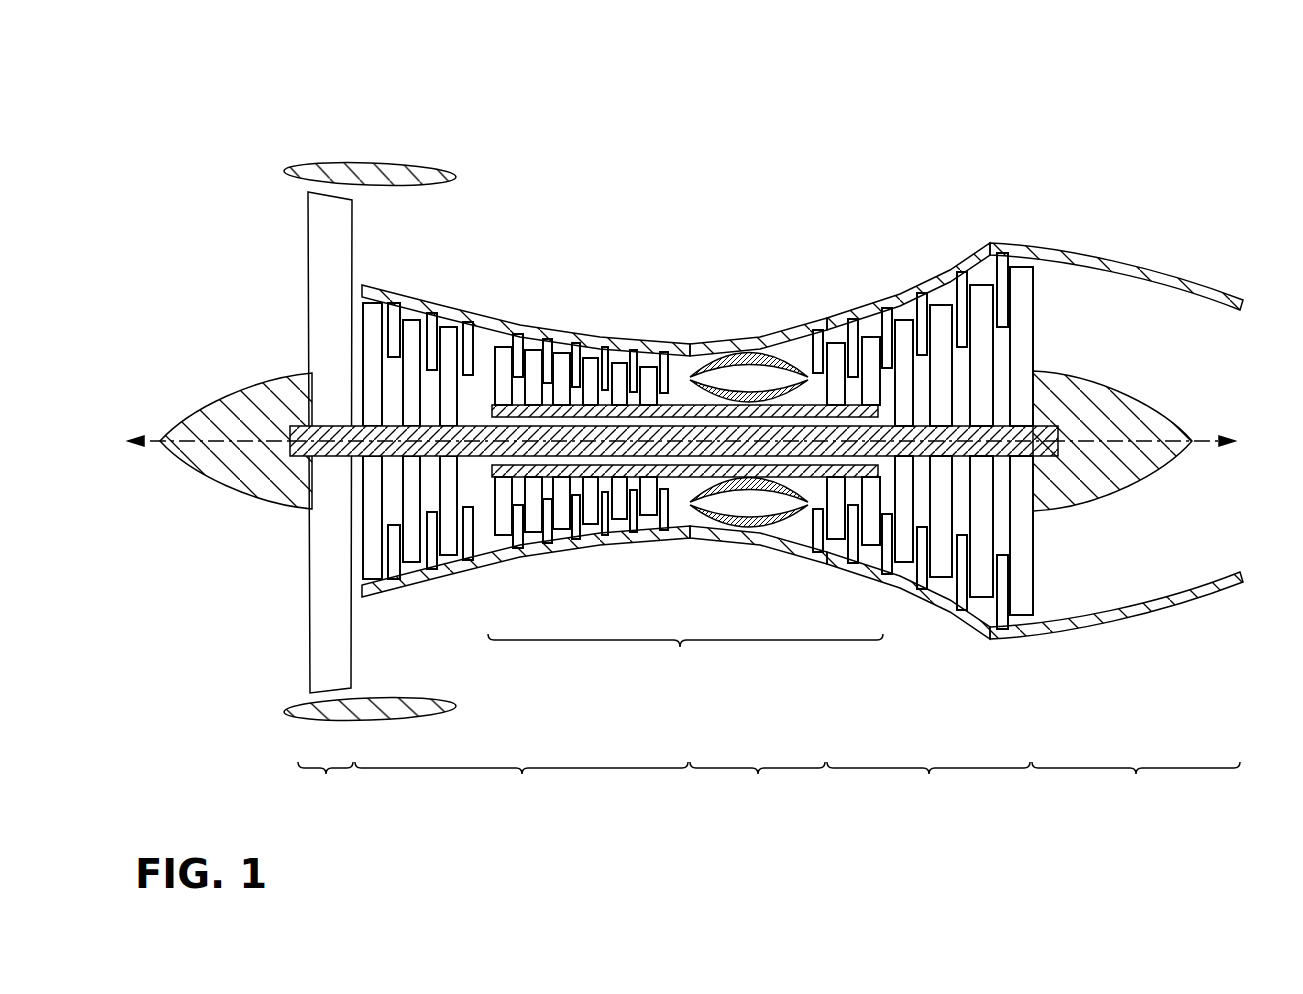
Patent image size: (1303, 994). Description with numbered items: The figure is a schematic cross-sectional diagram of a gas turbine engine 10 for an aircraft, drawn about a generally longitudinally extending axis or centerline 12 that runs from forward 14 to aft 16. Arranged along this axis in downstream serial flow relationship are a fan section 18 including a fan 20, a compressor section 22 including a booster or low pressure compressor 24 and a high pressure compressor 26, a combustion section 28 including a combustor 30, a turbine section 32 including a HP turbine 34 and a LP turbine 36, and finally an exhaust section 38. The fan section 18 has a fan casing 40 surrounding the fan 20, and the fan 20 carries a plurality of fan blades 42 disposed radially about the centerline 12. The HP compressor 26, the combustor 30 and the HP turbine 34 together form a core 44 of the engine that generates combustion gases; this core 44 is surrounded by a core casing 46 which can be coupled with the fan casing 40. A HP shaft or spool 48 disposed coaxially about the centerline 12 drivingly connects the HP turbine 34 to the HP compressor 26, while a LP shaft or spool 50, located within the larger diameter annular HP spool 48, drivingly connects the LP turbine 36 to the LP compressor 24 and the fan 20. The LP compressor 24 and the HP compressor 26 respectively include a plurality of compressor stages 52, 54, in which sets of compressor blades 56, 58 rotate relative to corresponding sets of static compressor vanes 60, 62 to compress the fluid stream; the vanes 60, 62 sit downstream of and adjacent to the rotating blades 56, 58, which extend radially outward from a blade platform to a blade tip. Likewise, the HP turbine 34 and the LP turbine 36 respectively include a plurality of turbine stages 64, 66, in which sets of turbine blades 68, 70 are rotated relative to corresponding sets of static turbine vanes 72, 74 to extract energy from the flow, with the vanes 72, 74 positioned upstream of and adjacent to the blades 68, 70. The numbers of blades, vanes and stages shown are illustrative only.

The gas turbine engine 10 is at (184, 100).
The centerline 12 is at (217, 443).
The forward 14 is at (124, 441).
The aft 16 is at (1241, 441).
The fan section 18 is at (325, 783).
The fan 20 is at (303, 250).
The compressor section 22 is at (521, 783).
The low pressure compressor 24 is at (483, 585).
The high pressure compressor 26 is at (630, 554).
The combustion section 28 is at (757, 783).
The combustor 30 is at (797, 356).
The turbine section 32 is at (928, 783).
The HP turbine 34 is at (811, 577).
The LP turbine 36 is at (927, 613).
The exhaust section 38 is at (1116, 524).
The fan casing 40 is at (373, 162).
The fan blades 42 is at (318, 643).
The core 44 is at (685, 657).
The core casing 46 is at (728, 342).
The HP spool 48 is at (687, 405).
The LP spool 50 is at (474, 425).
The compressor stages 52 is at (362, 280).
The compressor stages 54 is at (503, 318).
The compressor blades 56 is at (394, 308).
The compressor blades 58 is at (507, 352).
The static compressor vanes 60 is at (412, 325).
The static compressor vanes 62 is at (518, 350).
The turbine stages 64 is at (840, 310).
The turbine stages 66 is at (960, 255).
The turbine blades 68 is at (853, 345).
The turbine blades 70 is at (1003, 325).
The static turbine vanes 72 is at (863, 325).
The static turbine vanes 74 is at (980, 302).